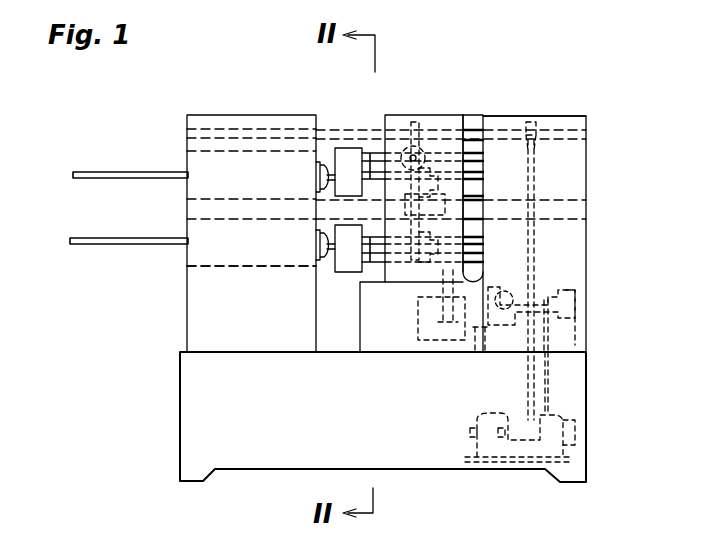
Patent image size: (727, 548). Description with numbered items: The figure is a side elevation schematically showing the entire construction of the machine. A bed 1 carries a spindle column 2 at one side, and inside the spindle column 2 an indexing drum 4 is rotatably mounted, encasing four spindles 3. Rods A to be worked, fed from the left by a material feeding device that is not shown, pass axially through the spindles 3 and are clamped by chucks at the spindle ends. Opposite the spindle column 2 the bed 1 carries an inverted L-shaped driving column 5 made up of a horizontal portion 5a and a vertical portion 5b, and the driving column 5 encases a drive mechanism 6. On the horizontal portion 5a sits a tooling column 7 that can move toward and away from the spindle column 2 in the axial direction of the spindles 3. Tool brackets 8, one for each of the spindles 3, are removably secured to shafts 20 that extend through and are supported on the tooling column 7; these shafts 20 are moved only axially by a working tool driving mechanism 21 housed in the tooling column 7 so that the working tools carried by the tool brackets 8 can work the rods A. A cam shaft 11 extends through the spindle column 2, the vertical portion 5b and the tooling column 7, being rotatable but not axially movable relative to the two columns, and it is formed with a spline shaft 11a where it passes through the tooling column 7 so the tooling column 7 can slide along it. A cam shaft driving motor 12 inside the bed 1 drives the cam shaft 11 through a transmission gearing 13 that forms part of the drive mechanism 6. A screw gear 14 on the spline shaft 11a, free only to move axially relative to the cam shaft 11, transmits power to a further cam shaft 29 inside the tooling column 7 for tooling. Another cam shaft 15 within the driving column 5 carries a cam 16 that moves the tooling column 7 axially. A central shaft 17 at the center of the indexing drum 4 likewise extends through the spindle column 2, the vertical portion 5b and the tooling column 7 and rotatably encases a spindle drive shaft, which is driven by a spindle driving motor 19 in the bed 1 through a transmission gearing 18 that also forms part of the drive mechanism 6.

The bed 1 is at (193, 410).
The spindle column 2 is at (200, 330).
The spindles 3 is at (320, 162).
The indexing drum 4 is at (222, 268).
The driving column 5 is at (580, 197).
The horizontal portion 5a is at (372, 338).
The vertical portion 5b is at (578, 168).
The drive mechanism 6 is at (543, 292).
The tooling column 7 is at (463, 120).
The tool brackets 8 is at (345, 150).
The cam shaft 11 is at (476, 131).
The spline shaft 11a is at (443, 131).
The cam shaft driving motor 12 is at (490, 440).
The transmission gearing 13 is at (576, 291).
The screw gear 14 is at (415, 130).
The cam shaft 15 is at (478, 352).
The cam 16 is at (447, 340).
The central shaft 17 is at (475, 197).
The transmission gearing 18 is at (586, 340).
The spindle driving motor 19 is at (540, 440).
The shafts 20 is at (370, 176).
The working tool driving mechanism 21 is at (438, 228).
The cam shaft 29 is at (410, 147).
The rods A is at (128, 171).